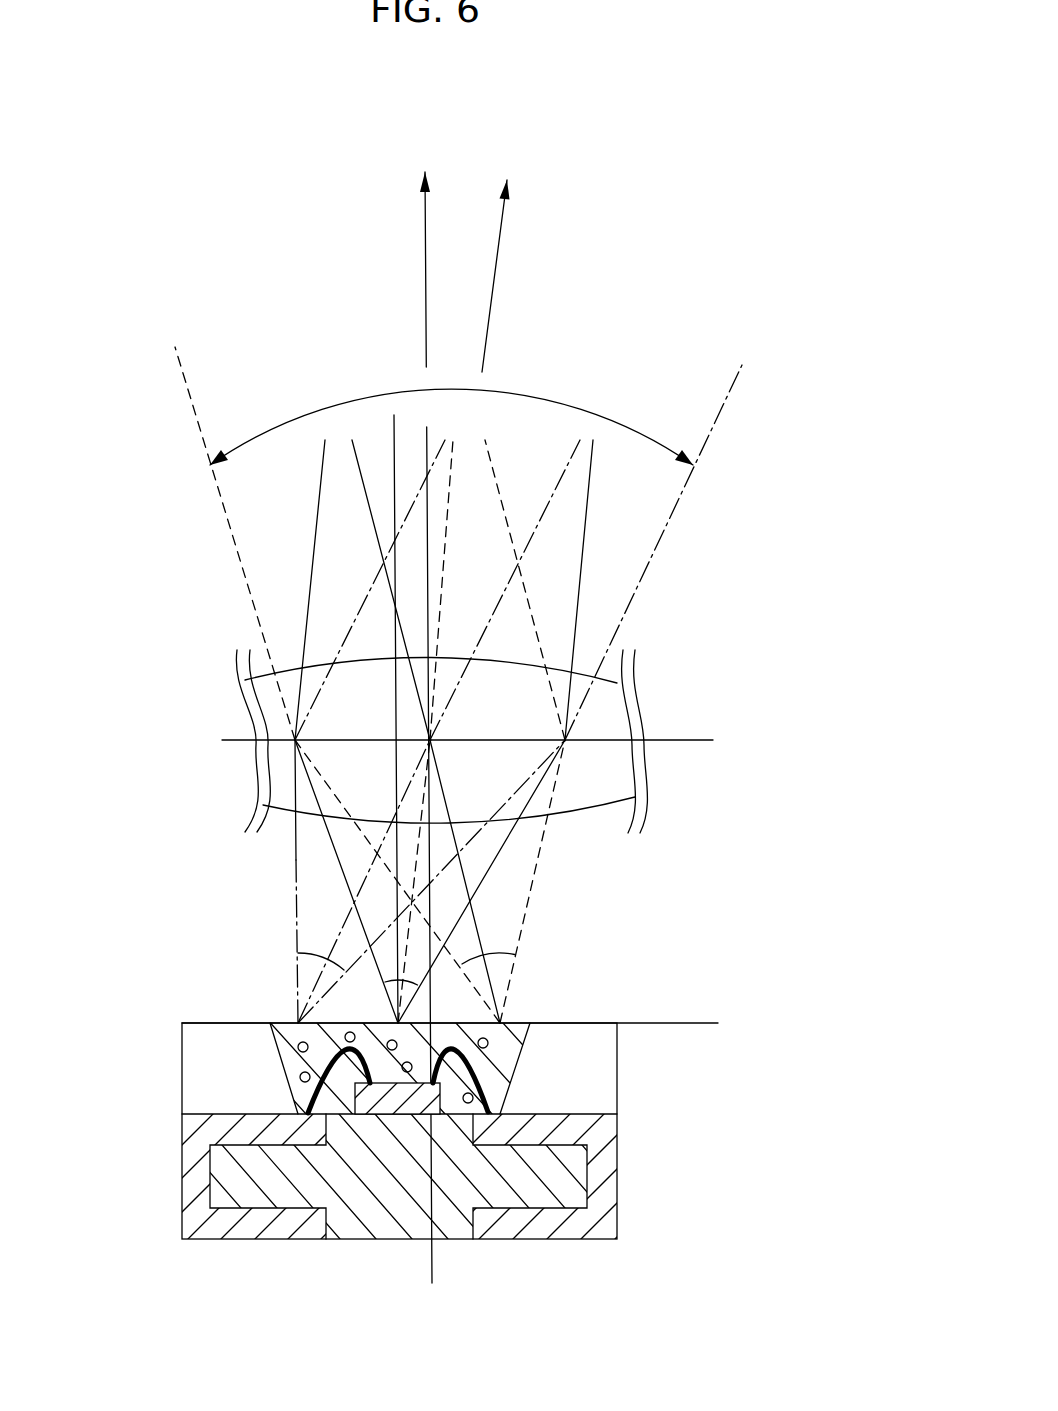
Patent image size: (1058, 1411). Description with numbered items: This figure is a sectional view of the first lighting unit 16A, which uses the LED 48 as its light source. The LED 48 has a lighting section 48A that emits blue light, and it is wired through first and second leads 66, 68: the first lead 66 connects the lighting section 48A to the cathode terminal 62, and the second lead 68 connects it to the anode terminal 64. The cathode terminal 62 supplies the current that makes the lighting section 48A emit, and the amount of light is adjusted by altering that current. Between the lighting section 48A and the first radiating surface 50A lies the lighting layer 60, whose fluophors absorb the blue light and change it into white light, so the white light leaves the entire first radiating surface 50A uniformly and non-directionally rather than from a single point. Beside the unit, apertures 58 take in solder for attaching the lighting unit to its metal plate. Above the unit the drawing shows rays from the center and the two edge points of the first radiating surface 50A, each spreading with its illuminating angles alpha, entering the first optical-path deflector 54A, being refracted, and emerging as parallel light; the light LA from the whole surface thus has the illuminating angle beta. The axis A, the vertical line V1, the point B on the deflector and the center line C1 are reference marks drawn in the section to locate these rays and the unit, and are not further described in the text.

The first lighting unit 16A is at (748, 1038).
The LED 48 is at (652, 1174).
The lighting section 48A is at (387, 1116).
The first radiating surface 50A is at (513, 1022).
The first optical-path deflector 54A is at (620, 650).
The apertures 58 is at (300, 1050).
The lighting layer 60 is at (503, 1043).
The cathode terminal 62 is at (258, 1240).
The anode terminal 64 is at (538, 1240).
The first lead 66 is at (300, 1097).
The second lead 68 is at (478, 1082).
The optical axis of lens A is at (425, 252).
The light LA is at (498, 252).
The vertical line through chip center V1 is at (393, 437).
The lens center point B is at (433, 738).
The center line of substrate C1 is at (433, 1263).